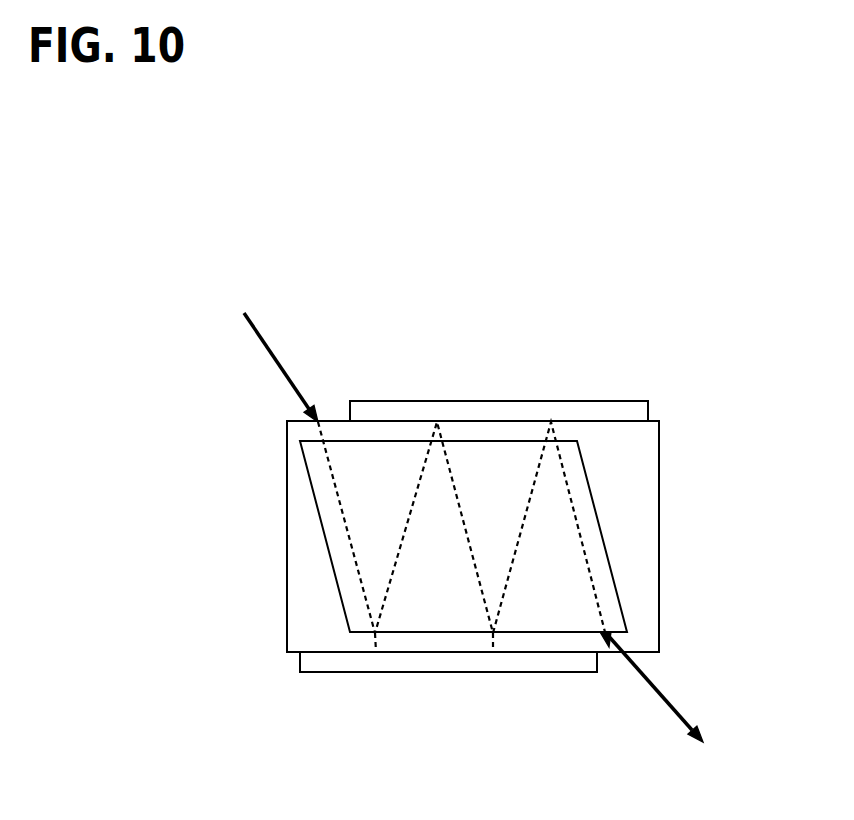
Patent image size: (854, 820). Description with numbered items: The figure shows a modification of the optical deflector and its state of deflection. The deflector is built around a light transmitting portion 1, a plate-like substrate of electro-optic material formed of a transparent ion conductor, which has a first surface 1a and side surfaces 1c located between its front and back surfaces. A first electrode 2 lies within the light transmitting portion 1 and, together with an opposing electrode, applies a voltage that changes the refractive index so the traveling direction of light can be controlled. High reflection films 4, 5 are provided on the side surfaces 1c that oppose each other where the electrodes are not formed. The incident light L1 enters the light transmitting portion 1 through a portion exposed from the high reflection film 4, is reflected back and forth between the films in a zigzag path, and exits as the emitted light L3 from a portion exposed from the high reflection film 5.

The light transmitting portion 1 is at (659, 523).
The first surface 1a is at (635, 562).
The side surface 1c is at (607, 418).
The first electrode 2 is at (590, 477).
The high reflection film 4 is at (499, 410).
The high reflection film 5 is at (460, 665).
The incident light L1 is at (270, 347).
The emitted light L3 is at (650, 688).